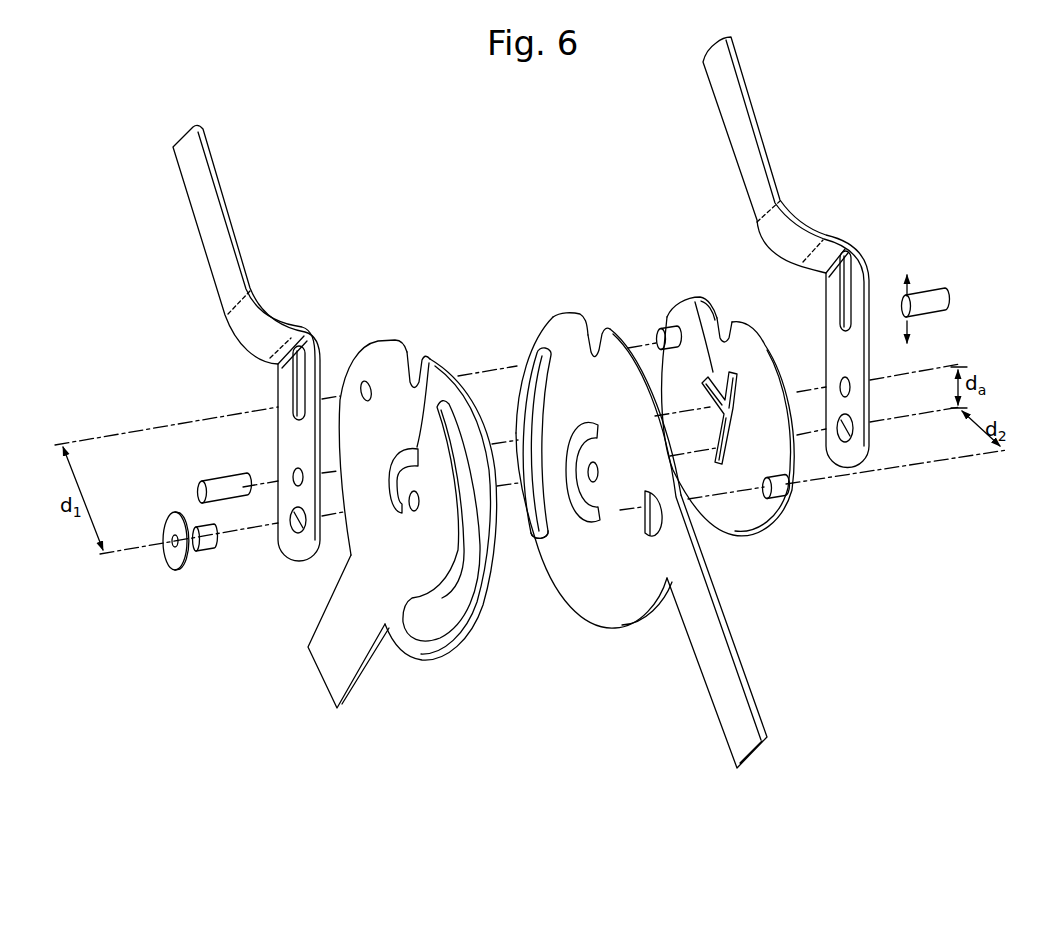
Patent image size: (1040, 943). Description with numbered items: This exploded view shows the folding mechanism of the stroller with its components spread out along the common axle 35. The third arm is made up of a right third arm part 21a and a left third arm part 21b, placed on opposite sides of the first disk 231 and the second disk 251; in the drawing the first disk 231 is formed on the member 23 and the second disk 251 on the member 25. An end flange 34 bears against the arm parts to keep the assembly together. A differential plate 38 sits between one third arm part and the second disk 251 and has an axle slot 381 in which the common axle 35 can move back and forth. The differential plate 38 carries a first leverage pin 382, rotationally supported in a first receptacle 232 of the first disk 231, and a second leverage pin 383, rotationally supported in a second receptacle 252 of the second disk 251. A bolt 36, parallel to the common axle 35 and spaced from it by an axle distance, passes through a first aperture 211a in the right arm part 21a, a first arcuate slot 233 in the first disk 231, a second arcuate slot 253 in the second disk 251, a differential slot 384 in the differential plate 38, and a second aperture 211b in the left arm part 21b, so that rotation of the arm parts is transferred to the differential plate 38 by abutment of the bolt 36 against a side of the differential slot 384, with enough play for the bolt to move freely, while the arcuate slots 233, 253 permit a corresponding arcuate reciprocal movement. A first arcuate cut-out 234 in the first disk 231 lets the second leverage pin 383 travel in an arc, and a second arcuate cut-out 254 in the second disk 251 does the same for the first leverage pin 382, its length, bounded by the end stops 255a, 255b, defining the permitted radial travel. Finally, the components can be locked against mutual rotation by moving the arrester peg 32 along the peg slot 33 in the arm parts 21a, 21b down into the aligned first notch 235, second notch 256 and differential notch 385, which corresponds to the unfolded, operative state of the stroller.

The right third arm part 21a is at (207, 222).
The left third arm part 21b is at (738, 112).
The first aperture 211a is at (294, 474).
The second aperture 211b is at (850, 384).
The first cam plate 23 is at (377, 487).
The first disk 231 is at (390, 342).
The first receptacle 232 is at (363, 382).
The first arcuate slot 233 is at (418, 448).
The first arcuate cut-out 234 is at (445, 620).
The first notch 235 is at (414, 380).
The second cam plate 25 is at (623, 503).
The second disk 251 is at (573, 314).
The second receptacle 252 is at (647, 536).
The second arcuate slot 253 is at (588, 522).
The second arcuate cut-out 254 is at (526, 382).
The end stop 255a is at (547, 360).
The end stop 255b is at (534, 538).
The second notch 256 is at (593, 350).
The arrester peg 32 is at (942, 297).
The peg slot 33 is at (297, 383).
The end flange 34 is at (173, 562).
The common axle 35 is at (205, 543).
The bolt 36 is at (218, 485).
The differential plate 38 is at (726, 422).
The axle slot 381 is at (739, 428).
The first leverage pin 382 is at (666, 327).
The second leverage pin 383 is at (777, 498).
The differential slot 384 is at (694, 300).
The differential notch 385 is at (730, 328).